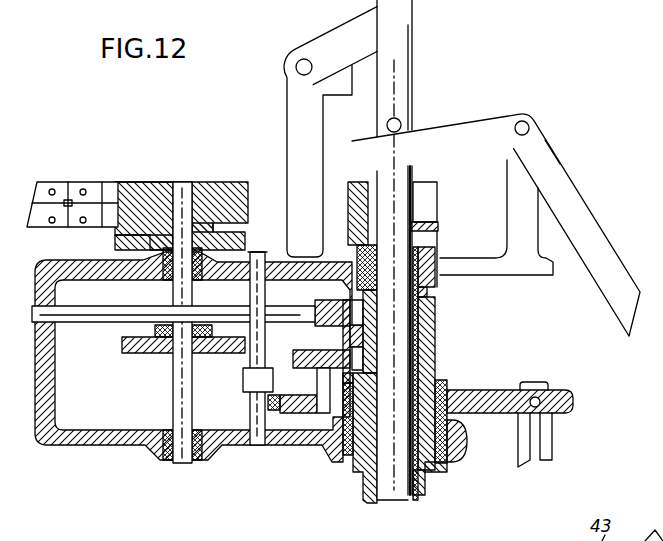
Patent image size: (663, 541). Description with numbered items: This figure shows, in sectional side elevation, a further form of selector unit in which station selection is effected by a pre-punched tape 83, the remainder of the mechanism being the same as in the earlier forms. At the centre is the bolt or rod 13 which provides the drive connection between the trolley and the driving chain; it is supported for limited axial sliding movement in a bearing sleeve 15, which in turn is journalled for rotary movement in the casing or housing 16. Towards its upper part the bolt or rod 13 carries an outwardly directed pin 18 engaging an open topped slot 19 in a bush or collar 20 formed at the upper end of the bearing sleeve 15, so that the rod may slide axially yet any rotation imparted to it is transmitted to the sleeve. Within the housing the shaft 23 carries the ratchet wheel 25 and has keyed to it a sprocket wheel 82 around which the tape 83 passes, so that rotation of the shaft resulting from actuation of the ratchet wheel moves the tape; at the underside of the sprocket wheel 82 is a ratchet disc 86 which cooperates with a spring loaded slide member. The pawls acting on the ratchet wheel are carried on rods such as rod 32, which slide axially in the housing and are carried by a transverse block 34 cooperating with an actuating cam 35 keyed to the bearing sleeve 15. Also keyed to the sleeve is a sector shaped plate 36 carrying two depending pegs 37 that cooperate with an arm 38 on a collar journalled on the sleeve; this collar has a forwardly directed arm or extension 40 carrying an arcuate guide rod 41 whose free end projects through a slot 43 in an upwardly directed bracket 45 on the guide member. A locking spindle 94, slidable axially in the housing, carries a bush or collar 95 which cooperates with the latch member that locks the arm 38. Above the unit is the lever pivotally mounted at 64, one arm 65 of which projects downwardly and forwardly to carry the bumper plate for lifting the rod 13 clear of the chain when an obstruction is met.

The bolt or rod 13 is at (403, 298).
The bearing sleeve 15 is at (432, 348).
The casing or housing 16 is at (277, 250).
The outwardly directed pin 18 is at (439, 224).
The open topped slot 19 is at (439, 197).
The bush or collar 20 is at (352, 188).
The shaft 23 is at (173, 289).
The ratchet wheel 25 is at (124, 346).
The rod 32 is at (110, 310).
The transverse block 34 is at (318, 302).
The actuating cam 35 is at (350, 326).
The sector shaped plate 36 is at (299, 350).
The depending pegs 37 is at (317, 378).
The arm 38 is at (302, 404).
The arm or extension 40 is at (481, 391).
The arcuate guide rod 41 is at (538, 398).
The slot 43 is at (526, 446).
The upwardly directed bracket 45 is at (546, 440).
The lever pivot 64 is at (534, 125).
The lever arm 65 is at (565, 174).
The sprocket wheel 82 is at (221, 186).
The pre-punched tape 83 is at (78, 181).
The ratchet disc 86 is at (120, 240).
The locking spindle 94 is at (251, 291).
The bush or collar 95 is at (243, 382).